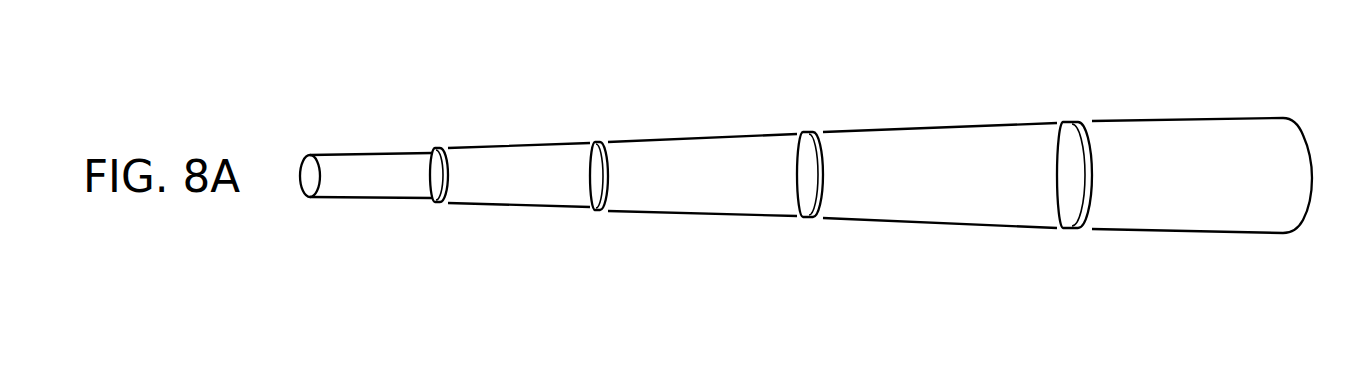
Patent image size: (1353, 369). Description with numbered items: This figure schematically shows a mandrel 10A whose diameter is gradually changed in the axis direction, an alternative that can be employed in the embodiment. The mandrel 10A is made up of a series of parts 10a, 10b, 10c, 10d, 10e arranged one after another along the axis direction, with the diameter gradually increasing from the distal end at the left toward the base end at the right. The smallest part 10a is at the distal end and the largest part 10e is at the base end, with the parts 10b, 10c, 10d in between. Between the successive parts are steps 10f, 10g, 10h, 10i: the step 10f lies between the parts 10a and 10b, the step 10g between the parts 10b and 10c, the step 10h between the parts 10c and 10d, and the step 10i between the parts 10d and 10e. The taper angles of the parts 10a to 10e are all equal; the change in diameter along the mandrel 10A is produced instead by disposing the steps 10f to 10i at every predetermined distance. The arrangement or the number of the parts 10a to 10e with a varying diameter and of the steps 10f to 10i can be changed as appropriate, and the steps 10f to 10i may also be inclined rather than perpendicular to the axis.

The mandrel 10A is at (361, 104).
The part 10a is at (372, 198).
The part 10b is at (513, 205).
The part 10c is at (695, 215).
The part 10d is at (930, 220).
The part 10e is at (1177, 232).
The step 10f is at (431, 148).
The step 10g is at (590, 142).
The step 10h is at (798, 133).
The step 10i is at (1059, 122).